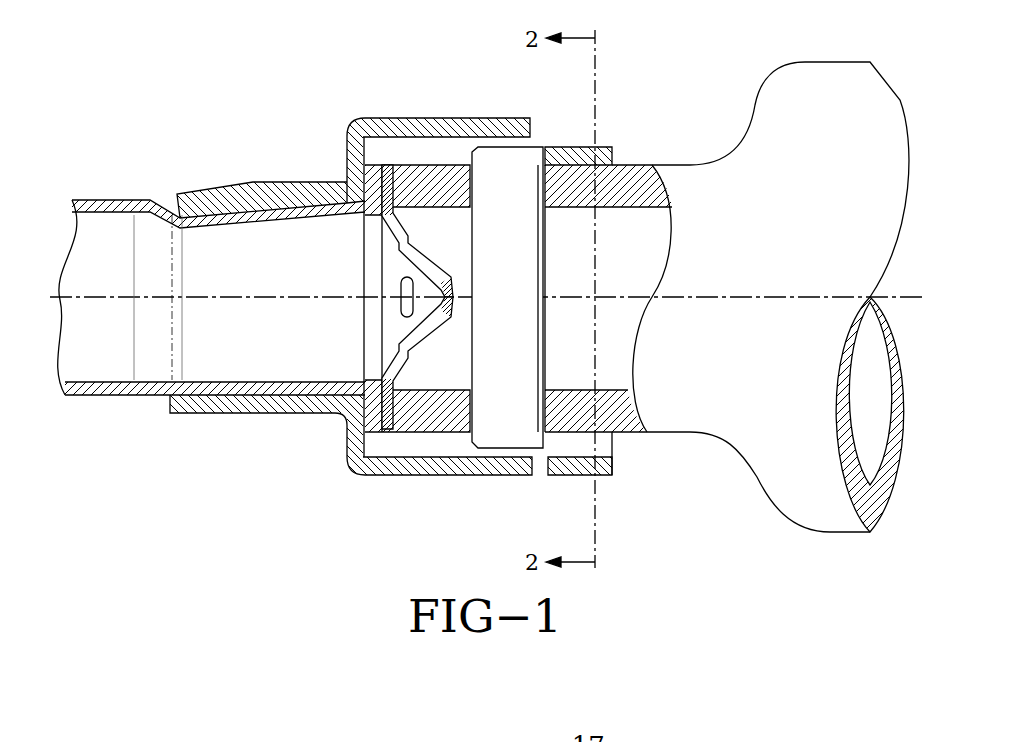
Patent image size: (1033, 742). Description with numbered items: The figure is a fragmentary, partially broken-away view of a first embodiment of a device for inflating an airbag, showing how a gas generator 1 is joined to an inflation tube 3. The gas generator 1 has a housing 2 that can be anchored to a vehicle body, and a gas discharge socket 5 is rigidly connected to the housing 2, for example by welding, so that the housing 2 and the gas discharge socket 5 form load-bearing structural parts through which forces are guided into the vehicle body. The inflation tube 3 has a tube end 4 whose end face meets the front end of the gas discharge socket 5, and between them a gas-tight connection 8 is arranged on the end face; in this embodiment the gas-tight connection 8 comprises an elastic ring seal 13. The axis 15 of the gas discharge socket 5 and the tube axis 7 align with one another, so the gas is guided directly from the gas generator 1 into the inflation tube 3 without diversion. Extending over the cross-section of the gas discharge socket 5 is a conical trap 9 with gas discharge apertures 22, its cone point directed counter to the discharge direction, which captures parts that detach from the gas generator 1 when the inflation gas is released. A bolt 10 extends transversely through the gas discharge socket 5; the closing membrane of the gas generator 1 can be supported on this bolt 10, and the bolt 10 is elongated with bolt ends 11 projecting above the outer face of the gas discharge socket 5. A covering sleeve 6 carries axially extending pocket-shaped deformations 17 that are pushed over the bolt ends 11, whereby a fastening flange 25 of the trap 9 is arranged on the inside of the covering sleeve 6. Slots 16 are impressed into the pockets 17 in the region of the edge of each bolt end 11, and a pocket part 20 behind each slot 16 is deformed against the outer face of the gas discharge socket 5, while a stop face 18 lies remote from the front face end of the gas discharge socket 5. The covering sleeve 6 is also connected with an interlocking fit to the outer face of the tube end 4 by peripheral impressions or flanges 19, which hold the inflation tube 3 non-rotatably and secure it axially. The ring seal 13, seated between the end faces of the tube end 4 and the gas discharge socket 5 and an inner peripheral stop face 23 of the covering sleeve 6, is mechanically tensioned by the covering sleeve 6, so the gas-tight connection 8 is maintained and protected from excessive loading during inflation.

The gas generator 1 is at (760, 280).
The housing 2 is at (833, 77).
The inflation tube 3 is at (115, 390).
The tube end 4 is at (258, 172).
The gas discharge socket 5 is at (622, 420).
The covering sleeve 6 is at (277, 407).
The tube axis 7 is at (275, 296).
The gas-tight connection 8 is at (386, 160).
The trap 9 is at (452, 346).
The bolt 10 is at (514, 172).
The bolt ends 11 is at (486, 158).
The elastic ring seal 13 is at (373, 415).
The axis of the gas discharge socket 15 is at (728, 297).
The slots 16 is at (543, 150).
The pockets 17 is at (433, 312).
The stop face 18 is at (547, 160).
The impressions or flanges 19 is at (190, 196).
The pocket part 20 is at (602, 155).
The gas discharge apertures 22 is at (421, 258).
The inner peripheral stop face 23 is at (377, 164).
The fastening flange 25 is at (389, 412).